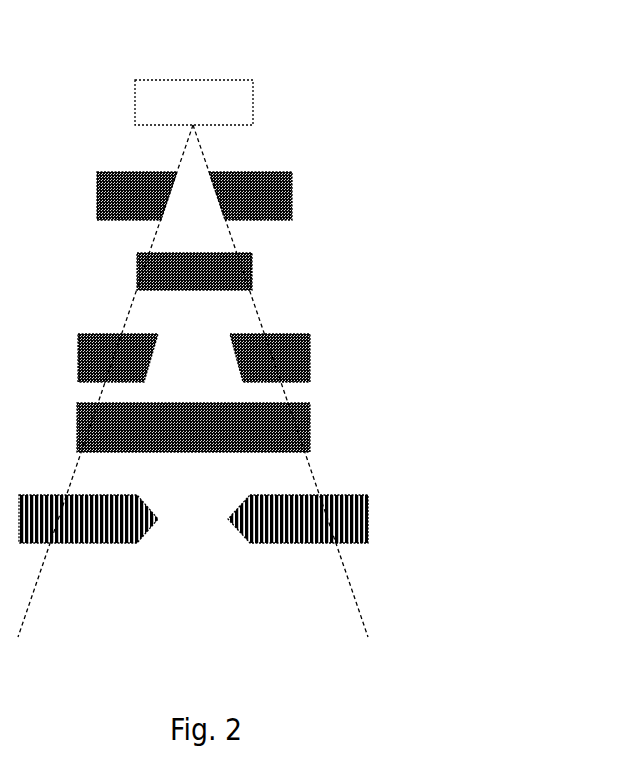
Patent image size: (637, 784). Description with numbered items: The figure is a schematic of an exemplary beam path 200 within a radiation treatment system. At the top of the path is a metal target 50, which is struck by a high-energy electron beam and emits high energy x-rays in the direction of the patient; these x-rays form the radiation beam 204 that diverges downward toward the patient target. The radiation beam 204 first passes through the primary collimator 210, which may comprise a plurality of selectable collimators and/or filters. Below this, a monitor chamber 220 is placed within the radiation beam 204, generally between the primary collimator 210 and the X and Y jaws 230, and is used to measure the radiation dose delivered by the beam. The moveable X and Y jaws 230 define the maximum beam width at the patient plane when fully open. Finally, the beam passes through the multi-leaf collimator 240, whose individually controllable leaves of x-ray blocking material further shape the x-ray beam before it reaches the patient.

The beam path 200 is at (217, 58).
The target 50 is at (233, 110).
The radiation beam 204 is at (210, 149).
The primary collimator 210 is at (275, 195).
The monitor chamber 220 is at (243, 270).
The X and Y jaws 230 is at (301, 393).
The multi-leaf collimator 240 is at (373, 519).